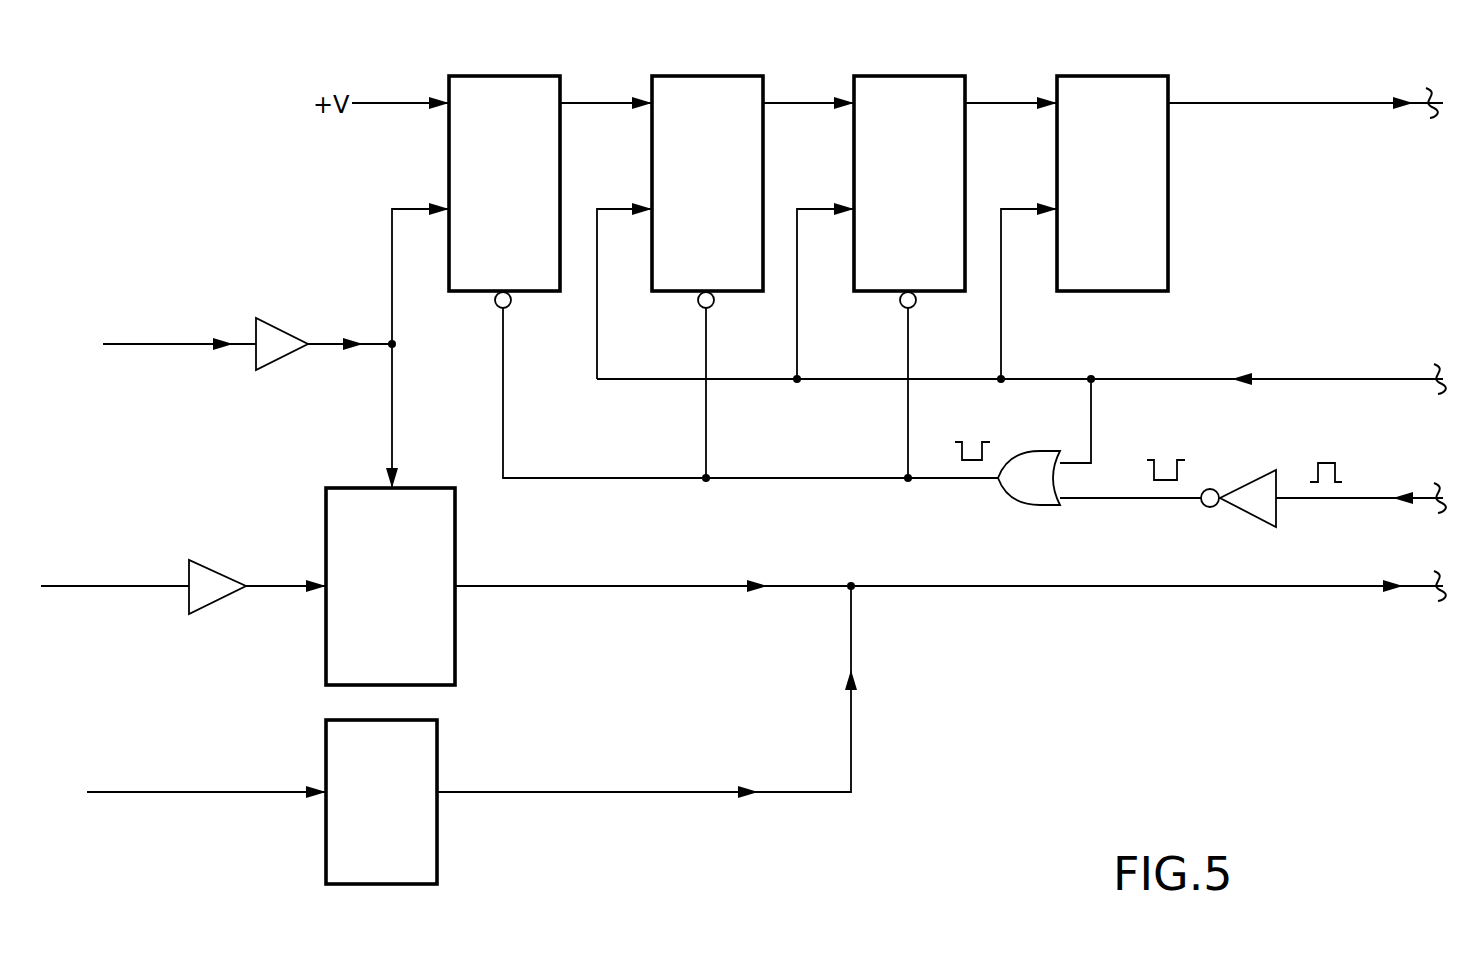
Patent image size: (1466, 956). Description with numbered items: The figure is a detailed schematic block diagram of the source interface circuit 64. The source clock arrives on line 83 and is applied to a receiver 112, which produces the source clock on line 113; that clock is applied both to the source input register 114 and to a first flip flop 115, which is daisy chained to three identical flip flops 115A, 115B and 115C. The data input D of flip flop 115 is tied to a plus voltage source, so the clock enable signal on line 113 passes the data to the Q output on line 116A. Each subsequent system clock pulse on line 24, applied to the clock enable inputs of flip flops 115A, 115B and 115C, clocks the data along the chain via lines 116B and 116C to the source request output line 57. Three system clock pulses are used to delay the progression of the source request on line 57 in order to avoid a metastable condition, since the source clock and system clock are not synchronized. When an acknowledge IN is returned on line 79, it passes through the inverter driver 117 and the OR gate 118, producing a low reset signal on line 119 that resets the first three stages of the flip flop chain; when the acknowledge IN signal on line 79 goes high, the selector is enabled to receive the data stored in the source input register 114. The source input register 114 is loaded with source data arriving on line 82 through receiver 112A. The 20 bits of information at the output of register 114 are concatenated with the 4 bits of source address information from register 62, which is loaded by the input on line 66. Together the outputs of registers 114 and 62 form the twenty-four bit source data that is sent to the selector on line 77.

The first flip flop 115 is at (505, 76).
The flip flop 115A is at (718, 77).
The flip flop 115B is at (910, 76).
The flip flop 115C is at (1127, 76).
The line 116A is at (612, 102).
The line 116B is at (813, 102).
The line 116C is at (995, 102).
The source request output line 57 is at (1305, 103).
The line 113 is at (393, 252).
The line 24 is at (1187, 379).
The line 119 is at (810, 478).
The OR gate 118 is at (1038, 502).
The inverter driver 117 is at (1245, 498).
The line 79 is at (1357, 498).
The line 83 is at (165, 344).
The receiver 112 is at (277, 348).
The line 82 is at (94, 586).
The receiver 112A is at (225, 600).
The bits of information 20 is at (142, 596).
The source input register 114 is at (455, 635).
The line 77 is at (1094, 586).
The source interface circuit 64 is at (962, 750).
The line 66 is at (259, 792).
The bits of source address information 4 is at (185, 803).
The register 62 is at (437, 842).